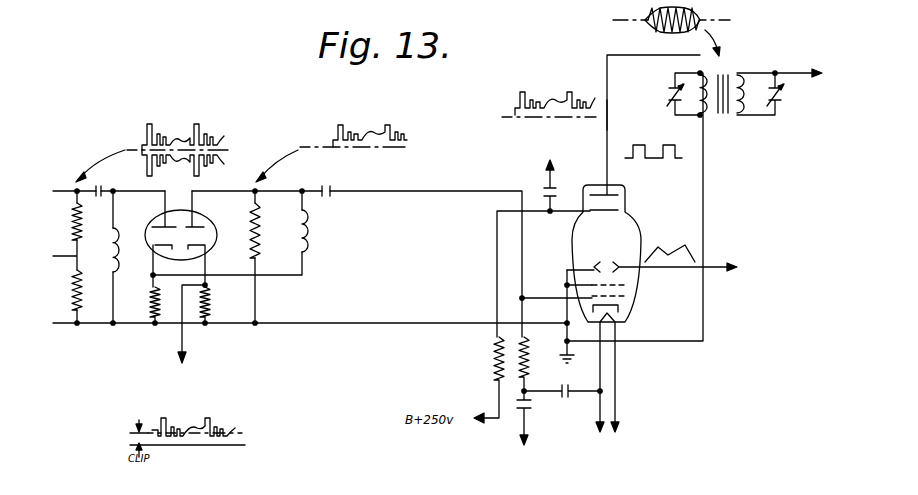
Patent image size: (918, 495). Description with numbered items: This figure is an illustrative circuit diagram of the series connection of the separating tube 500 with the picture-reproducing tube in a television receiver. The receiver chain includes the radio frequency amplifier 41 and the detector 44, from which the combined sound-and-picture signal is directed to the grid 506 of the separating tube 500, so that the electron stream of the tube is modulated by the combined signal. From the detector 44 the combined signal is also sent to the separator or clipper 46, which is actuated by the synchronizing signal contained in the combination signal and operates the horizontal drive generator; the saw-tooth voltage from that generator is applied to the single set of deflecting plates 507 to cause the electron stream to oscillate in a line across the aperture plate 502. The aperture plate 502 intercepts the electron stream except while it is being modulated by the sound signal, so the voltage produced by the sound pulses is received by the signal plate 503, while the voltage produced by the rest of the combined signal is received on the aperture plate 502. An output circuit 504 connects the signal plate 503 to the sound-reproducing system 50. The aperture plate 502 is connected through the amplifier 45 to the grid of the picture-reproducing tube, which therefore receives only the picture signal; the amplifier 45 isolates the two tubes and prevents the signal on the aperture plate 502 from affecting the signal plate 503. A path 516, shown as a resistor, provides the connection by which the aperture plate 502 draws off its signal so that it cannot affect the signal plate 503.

The radio frequency amplifier 41 is at (770, 277).
The detector 44 is at (175, 273).
The amplifier 45 is at (549, 151).
The separator or clipper 46 is at (209, 339).
The sound-reproducing system 50 is at (744, 104).
The separating tube 500 is at (640, 224).
The aperture plate 502 is at (618, 211).
The signal plate 503 is at (615, 196).
The output circuit 504 is at (636, 102).
The grid 506 is at (547, 296).
The deflecting plates 507 is at (618, 262).
The path 516 is at (494, 362).